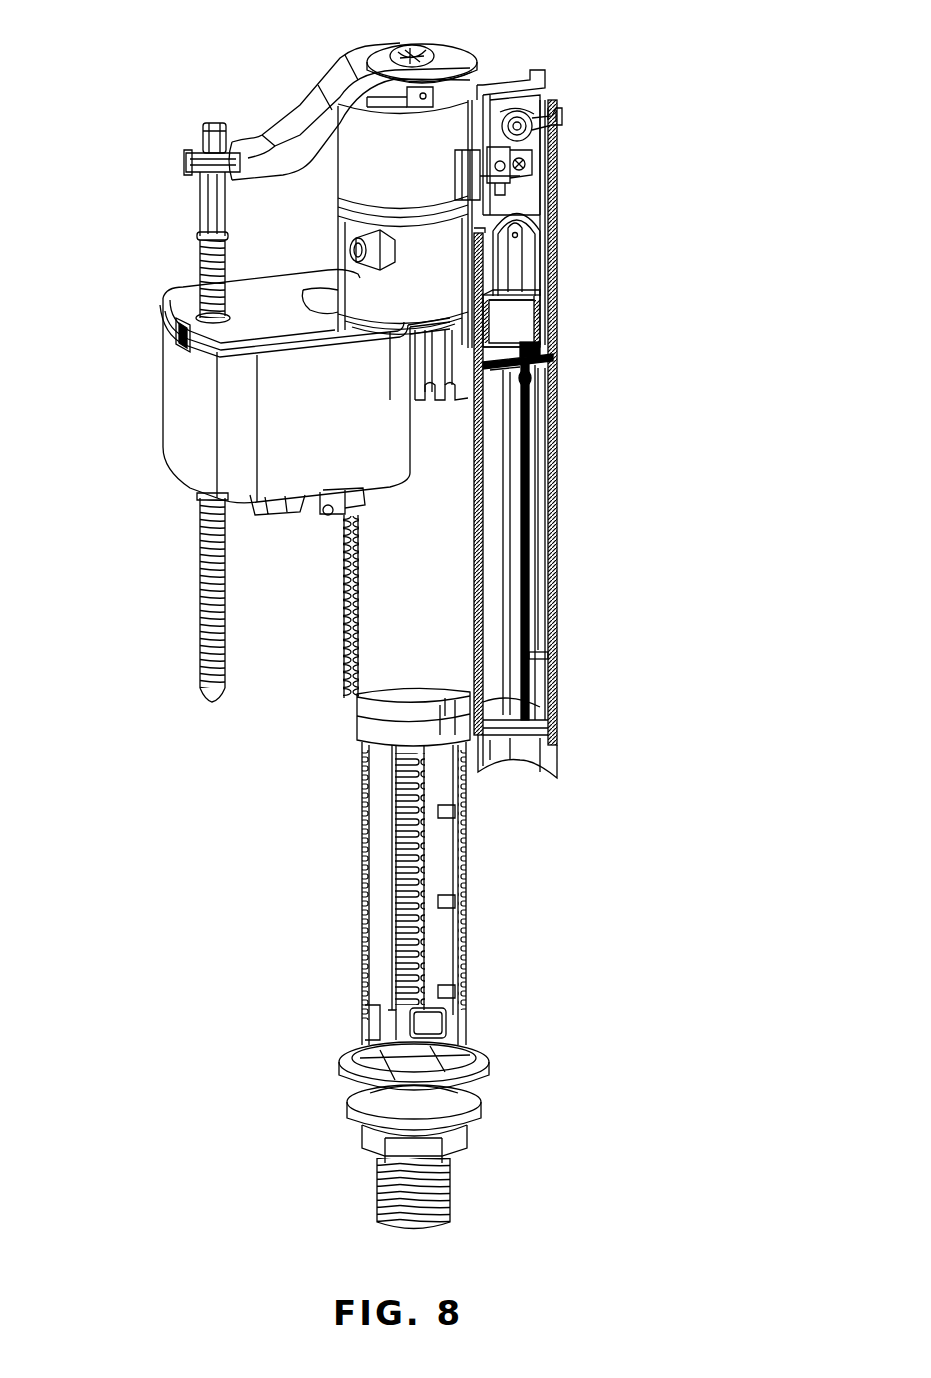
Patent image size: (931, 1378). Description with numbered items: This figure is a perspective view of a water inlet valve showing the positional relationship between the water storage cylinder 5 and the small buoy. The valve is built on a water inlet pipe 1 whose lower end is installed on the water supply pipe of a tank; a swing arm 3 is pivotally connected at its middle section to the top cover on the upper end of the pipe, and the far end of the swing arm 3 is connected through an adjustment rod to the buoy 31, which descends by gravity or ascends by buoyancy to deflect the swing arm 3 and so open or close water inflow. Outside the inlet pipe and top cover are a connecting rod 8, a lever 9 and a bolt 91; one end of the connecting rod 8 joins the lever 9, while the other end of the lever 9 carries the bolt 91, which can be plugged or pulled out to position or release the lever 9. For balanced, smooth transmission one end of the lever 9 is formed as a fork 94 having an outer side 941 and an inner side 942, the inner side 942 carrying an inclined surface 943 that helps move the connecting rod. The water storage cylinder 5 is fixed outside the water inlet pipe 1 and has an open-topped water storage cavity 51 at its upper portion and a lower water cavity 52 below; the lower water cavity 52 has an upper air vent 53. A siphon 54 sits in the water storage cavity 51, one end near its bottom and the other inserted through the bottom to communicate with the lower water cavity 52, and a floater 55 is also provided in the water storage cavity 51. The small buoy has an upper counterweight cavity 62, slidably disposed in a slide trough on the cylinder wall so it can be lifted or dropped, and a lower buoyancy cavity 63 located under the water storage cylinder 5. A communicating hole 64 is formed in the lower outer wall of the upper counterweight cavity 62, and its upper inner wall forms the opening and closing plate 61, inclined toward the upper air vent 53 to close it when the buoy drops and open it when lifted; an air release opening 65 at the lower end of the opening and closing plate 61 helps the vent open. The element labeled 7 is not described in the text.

The water inlet pipe 1 is at (433, 858).
The swing arm 3 is at (295, 120).
The top cover 7 is at (487, 103).
The connecting rod 8 is at (489, 110).
The lever 9 is at (388, 167).
The bolt 91 is at (557, 125).
The fork 94 is at (600, 183).
The outer side 941 is at (540, 178).
The inner side 942 is at (533, 150).
The inclined surface 943 is at (540, 162).
The buoy 31 is at (175, 397).
The water storage cylinder 5 is at (474, 493).
The water storage cavity 51 is at (487, 270).
The lower water cavity 52 is at (505, 533).
The upper air vent 53 is at (530, 395).
The siphon 54 is at (525, 283).
The floater 55 is at (527, 303).
The opening and closing plate 61 is at (522, 347).
The upper counterweight cavity 62 is at (535, 593).
The lower buoyancy cavity 63 is at (547, 726).
The communicating hole 64 is at (535, 655).
The air release opening 65 is at (527, 357).